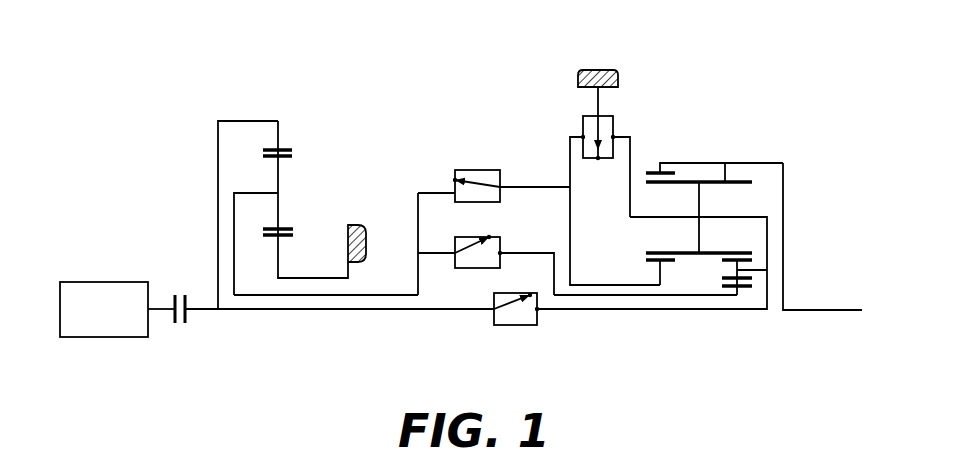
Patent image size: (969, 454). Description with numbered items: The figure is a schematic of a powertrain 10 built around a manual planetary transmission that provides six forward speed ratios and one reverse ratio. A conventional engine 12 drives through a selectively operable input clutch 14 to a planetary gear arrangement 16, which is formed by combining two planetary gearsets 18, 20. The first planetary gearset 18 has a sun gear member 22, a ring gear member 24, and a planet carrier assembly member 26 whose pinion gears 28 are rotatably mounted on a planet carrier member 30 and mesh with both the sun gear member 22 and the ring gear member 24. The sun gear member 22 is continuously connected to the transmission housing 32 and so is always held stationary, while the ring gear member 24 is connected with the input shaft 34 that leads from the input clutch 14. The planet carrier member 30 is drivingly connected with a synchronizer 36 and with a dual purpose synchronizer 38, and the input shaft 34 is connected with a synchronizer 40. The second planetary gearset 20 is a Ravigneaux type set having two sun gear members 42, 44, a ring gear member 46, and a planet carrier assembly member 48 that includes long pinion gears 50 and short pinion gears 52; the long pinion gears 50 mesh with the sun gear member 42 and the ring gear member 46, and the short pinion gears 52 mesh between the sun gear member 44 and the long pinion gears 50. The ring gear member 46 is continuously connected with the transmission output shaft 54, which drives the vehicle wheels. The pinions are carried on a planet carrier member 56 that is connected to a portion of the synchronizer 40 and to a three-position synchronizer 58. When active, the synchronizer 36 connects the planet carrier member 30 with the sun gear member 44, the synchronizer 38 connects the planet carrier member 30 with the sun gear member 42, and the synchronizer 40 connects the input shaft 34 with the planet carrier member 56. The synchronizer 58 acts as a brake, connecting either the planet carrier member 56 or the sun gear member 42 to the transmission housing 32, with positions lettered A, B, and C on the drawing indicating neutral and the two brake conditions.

The powertrain 10 is at (146, 160).
The engine 12 is at (111, 280).
The input clutch 14 is at (180, 330).
The planetary gear arrangement 16 is at (359, 108).
The planetary gearset 18 is at (302, 173).
The planetary gearset 20 is at (761, 152).
The sun gear member 22 is at (280, 258).
The ring gear member 24 is at (287, 148).
The planet carrier assembly member 26 is at (290, 190).
The pinion gears 28 is at (286, 170).
The planet carrier member 30 is at (247, 192).
The transmission housing 32 is at (366, 244).
The input shaft 34 is at (205, 311).
The synchronizer 36 is at (503, 248).
The synchronizer 38 is at (503, 183).
The synchronizer 40 is at (500, 330).
The sun gear member 42 is at (661, 273).
The sun gear member 44 is at (738, 297).
The ring gear member 46 is at (660, 162).
The planet carrier assembly member 48 is at (754, 257).
The long pinion gears 50 is at (725, 163).
The short pinion gears 52 is at (755, 283).
The transmission output shaft 54 is at (785, 175).
The planet carrier member 56 is at (628, 212).
The synchronizer 58 is at (624, 107).